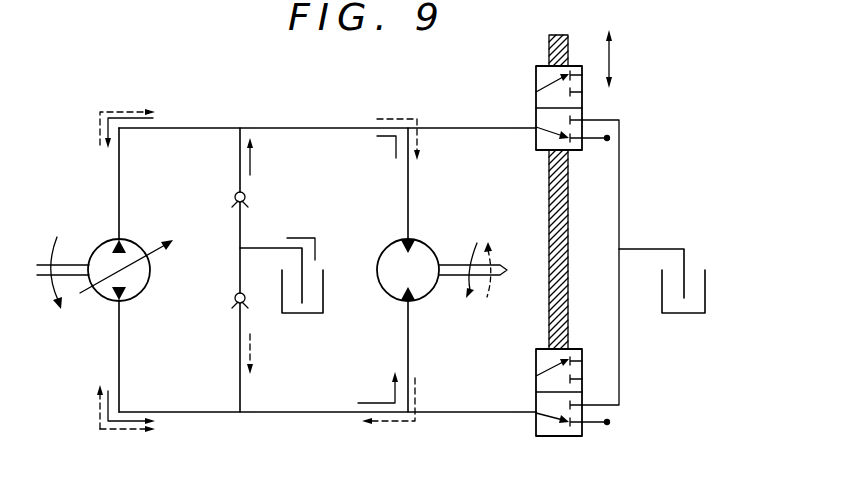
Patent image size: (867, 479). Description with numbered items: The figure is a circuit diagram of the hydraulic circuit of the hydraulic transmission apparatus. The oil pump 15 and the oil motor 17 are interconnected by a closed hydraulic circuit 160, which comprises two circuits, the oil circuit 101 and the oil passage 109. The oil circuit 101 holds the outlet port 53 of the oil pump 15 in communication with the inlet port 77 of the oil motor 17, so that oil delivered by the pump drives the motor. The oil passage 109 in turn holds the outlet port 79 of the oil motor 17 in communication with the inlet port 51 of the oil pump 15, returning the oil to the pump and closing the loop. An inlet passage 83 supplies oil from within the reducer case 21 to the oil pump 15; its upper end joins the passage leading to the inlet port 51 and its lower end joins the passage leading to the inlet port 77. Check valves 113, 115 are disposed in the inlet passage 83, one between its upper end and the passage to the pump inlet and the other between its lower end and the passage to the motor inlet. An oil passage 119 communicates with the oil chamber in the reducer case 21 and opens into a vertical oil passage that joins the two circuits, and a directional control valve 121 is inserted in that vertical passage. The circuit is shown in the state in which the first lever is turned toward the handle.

The closed hydraulic circuit 160 is at (186, 58).
The oil circuit 101 is at (205, 413).
The oil passage 109 is at (333, 128).
The inlet passage 83 is at (241, 128).
The check valve 113 is at (234, 196).
The check valve 115 is at (234, 299).
The oil pump 15 is at (115, 239).
The inlet port 51 is at (122, 239).
The outlet port 53 is at (116, 302).
The oil motor 17 is at (402, 242).
The outlet port 79 is at (414, 242).
The inlet port 77 is at (411, 302).
The reducer case 21 is at (310, 316).
The oil passage 119 is at (645, 249).
The directional control valve 121 is at (535, 115).